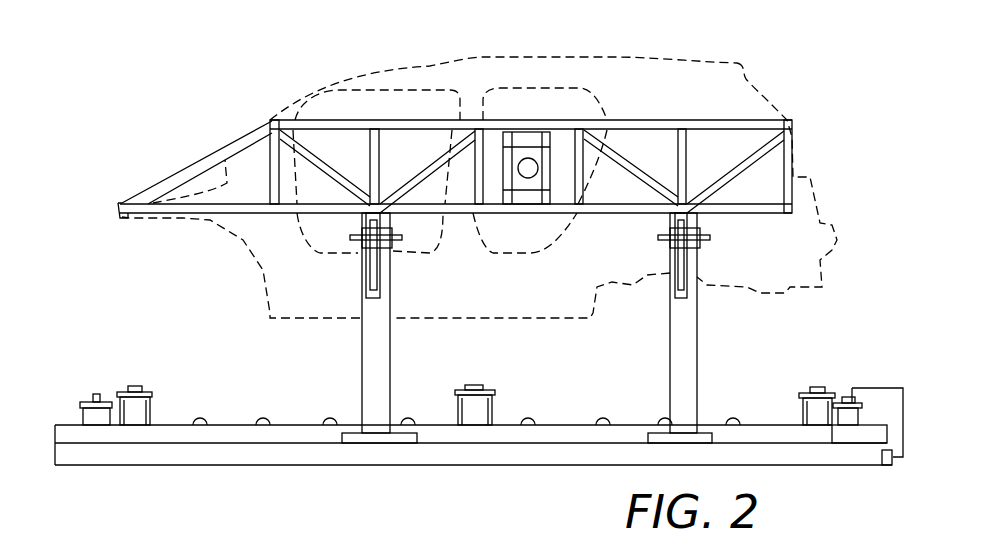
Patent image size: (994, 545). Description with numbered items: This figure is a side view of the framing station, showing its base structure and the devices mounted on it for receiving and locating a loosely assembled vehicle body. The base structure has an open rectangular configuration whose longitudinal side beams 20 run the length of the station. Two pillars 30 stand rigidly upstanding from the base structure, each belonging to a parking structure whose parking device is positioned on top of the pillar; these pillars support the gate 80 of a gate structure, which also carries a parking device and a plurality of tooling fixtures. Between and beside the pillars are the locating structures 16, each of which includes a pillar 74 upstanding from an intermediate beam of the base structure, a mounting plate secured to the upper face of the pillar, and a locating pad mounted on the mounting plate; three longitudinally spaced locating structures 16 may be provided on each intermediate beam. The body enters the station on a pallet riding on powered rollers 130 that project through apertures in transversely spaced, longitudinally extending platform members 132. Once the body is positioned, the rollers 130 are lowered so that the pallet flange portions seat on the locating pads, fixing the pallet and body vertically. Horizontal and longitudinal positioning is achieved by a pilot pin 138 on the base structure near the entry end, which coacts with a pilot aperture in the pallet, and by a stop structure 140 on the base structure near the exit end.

The gate 80 is at (191, 165).
The pillar 30 is at (380, 347).
The longitudinal side beam 20 is at (278, 455).
The locating structure 16 is at (139, 380).
The pillar 74 is at (140, 410).
The powered roller 130 is at (253, 413).
The platform member 132 is at (623, 423).
The pilot pin 138 is at (95, 397).
The stop structure 140 is at (857, 405).